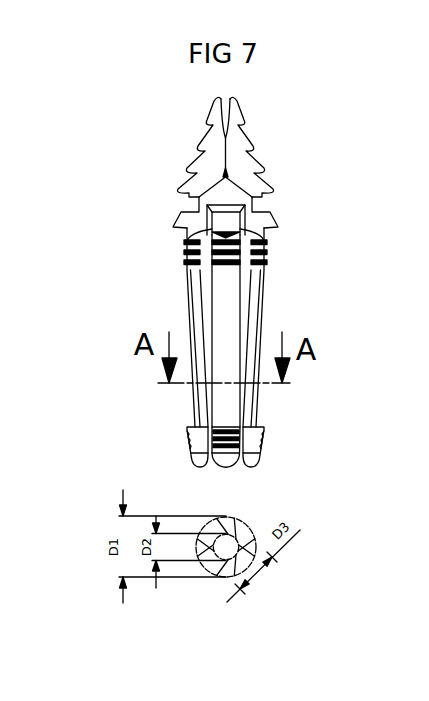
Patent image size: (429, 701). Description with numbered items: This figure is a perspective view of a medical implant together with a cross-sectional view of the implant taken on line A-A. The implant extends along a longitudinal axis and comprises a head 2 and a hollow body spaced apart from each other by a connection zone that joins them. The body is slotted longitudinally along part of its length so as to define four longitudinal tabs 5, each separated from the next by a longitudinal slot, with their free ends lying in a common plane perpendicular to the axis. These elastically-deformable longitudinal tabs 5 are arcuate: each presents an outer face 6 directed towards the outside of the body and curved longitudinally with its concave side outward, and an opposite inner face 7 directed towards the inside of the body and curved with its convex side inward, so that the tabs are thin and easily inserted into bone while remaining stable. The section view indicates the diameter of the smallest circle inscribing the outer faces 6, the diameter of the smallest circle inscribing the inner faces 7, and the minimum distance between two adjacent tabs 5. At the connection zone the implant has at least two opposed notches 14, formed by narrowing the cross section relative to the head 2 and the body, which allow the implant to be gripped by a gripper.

The head 2 is at (245, 150).
The notch 14 is at (253, 200).
The inner face 7 is at (245, 295).
The outer face 6 is at (262, 317).
The longitudinal tab 5 is at (243, 422).